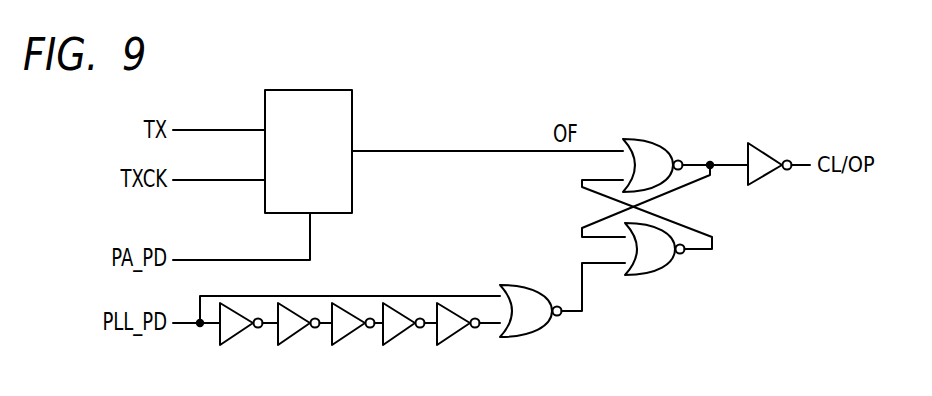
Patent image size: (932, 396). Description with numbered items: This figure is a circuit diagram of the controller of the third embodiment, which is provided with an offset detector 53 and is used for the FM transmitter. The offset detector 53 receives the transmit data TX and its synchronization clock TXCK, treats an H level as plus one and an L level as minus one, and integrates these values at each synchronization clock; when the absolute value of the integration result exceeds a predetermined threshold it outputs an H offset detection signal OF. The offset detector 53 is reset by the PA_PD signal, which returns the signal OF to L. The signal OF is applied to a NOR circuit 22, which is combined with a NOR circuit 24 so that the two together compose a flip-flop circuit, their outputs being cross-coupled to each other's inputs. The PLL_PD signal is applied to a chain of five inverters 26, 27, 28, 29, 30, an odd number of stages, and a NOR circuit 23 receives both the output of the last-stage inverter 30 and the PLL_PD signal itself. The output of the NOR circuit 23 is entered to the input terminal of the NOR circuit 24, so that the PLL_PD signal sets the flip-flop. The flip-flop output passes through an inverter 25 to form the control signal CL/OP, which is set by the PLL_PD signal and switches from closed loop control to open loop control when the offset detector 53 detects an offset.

The offset detector 53 is at (323, 90).
The NOR circuit 22 is at (650, 139).
The NOR circuit 23 is at (537, 285).
The NOR circuit 24 is at (650, 275).
The inverter 25 is at (770, 183).
The inverter 26 is at (237, 338).
The inverter 27 is at (293, 338).
The inverter 28 is at (348, 338).
The inverter 29 is at (398, 338).
The inverter 30 is at (452, 338).